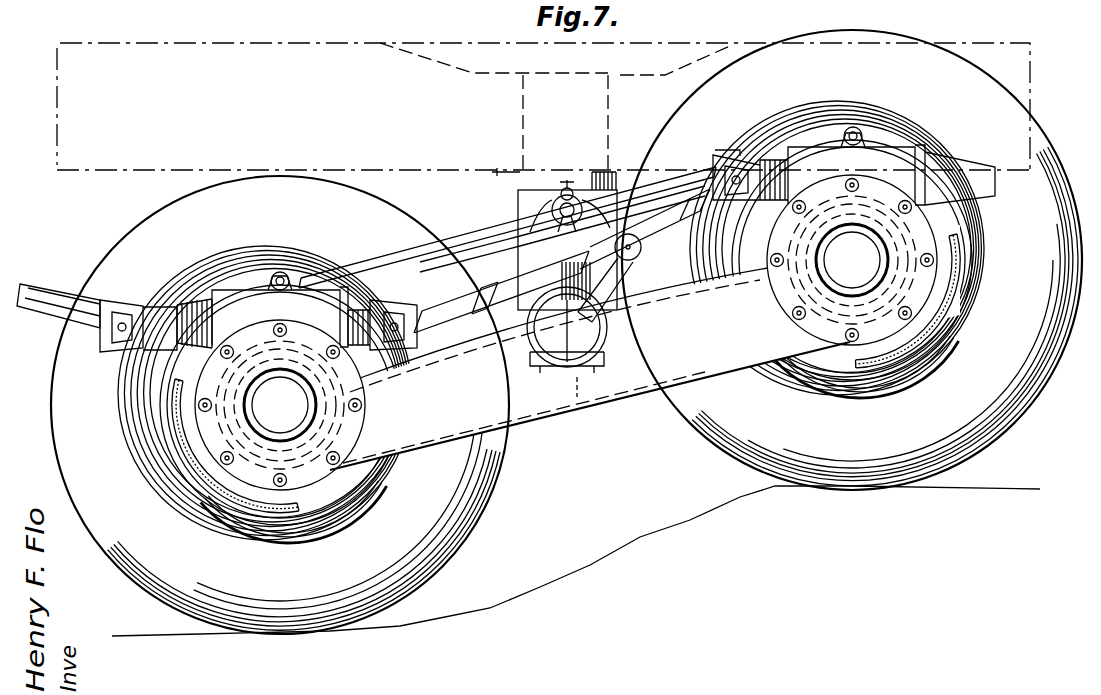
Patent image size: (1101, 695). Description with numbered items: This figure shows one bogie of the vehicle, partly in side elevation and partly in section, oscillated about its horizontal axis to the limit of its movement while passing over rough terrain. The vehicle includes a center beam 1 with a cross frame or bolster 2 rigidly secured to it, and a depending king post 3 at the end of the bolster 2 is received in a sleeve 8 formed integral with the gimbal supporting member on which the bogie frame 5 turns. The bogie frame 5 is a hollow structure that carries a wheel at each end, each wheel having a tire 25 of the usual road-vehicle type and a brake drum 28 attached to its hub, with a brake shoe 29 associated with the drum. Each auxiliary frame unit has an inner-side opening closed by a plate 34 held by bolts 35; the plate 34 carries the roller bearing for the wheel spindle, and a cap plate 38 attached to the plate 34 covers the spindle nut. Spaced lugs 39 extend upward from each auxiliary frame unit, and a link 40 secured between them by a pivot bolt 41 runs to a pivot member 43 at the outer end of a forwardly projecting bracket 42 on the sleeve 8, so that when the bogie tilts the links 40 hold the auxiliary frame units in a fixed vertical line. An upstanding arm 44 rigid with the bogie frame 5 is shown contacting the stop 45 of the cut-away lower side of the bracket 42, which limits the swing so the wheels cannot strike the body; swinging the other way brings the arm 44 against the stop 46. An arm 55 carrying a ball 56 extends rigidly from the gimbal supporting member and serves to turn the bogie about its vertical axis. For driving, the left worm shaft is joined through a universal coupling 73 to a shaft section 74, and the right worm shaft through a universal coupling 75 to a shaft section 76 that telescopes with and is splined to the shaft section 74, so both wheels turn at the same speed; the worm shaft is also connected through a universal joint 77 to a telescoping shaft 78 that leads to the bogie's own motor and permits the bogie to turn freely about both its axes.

The center beam 1 is at (150, 168).
The cross frame or bolster 2 is at (486, 78).
The king post 3 is at (515, 180).
The bogie frame 5 is at (590, 369).
The sleeve 8 is at (518, 206).
The tire 25 is at (566, 332).
The brake drum 28 is at (186, 450).
The brake shoe 29 is at (224, 497).
The plate 34 is at (348, 432).
The bolts 35 is at (200, 405).
The cap plate 38 is at (280, 407).
The lugs 39 is at (270, 279).
The link 40 is at (345, 268).
The pivot bolt 41 is at (283, 278).
The bracket 42 is at (560, 196).
The pivot member 43 is at (576, 190).
The upstanding arm 44 is at (528, 322).
The stop 45 is at (518, 240).
The stop 46 is at (612, 216).
The arm 55 is at (636, 262).
The ball 56 is at (641, 246).
The universal coupling 73 is at (399, 302).
The shaft section 74 is at (452, 324).
The universal coupling 75 is at (737, 155).
The shaft section 76 is at (678, 196).
The universal joint 77 is at (112, 340).
The shaft 78 is at (55, 312).